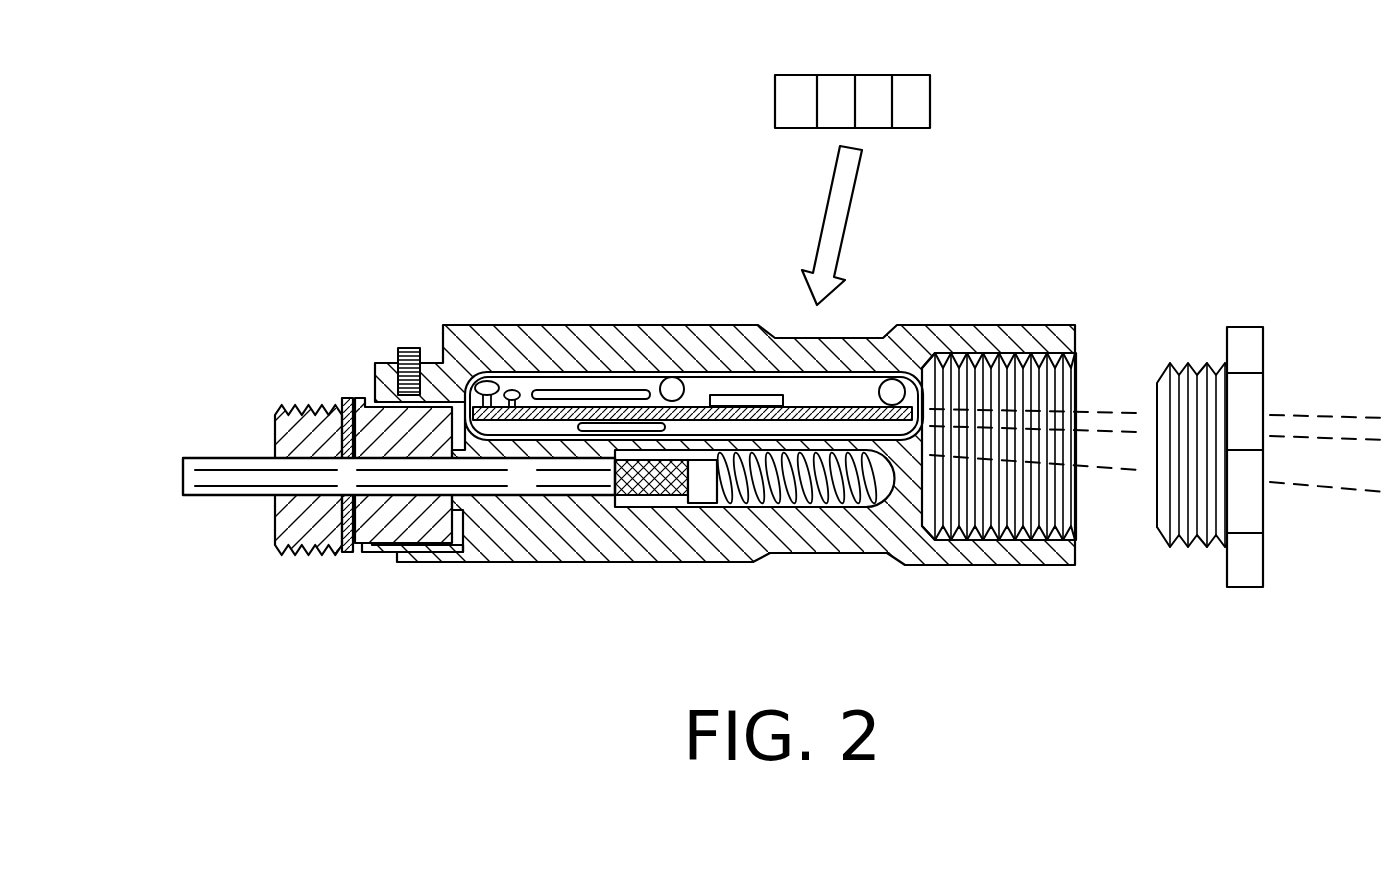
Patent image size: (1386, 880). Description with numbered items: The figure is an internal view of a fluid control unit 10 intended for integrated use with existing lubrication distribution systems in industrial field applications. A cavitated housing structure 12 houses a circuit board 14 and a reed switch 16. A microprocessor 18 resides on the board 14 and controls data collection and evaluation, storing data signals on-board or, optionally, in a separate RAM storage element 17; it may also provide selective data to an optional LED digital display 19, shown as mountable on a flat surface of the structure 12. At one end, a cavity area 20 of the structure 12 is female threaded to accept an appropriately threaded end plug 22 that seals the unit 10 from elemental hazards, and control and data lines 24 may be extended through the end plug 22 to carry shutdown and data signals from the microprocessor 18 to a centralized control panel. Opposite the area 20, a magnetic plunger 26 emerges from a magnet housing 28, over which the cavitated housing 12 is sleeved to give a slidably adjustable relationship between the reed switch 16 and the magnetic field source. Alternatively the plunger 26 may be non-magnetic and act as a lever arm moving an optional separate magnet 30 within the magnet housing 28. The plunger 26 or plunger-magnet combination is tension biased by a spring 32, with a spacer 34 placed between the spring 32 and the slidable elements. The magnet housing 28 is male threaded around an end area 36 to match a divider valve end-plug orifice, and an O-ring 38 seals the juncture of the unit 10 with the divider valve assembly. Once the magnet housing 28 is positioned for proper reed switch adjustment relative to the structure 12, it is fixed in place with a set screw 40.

The fluid control unit 10 is at (492, 651).
The cavitated housing structure 12 is at (983, 328).
The circuit board 14 is at (857, 408).
The reed switch 16 is at (652, 420).
The RAM storage element 17 is at (562, 393).
The microprocessor 18 is at (745, 398).
The LED digital display 19 is at (932, 100).
The cavity area 20 is at (1083, 503).
The end plug 22 is at (1262, 357).
The control and data lines 24 is at (1303, 488).
The magnetic plunger 26 is at (228, 497).
The magnet housing 28 is at (365, 553).
The magnet 30 is at (650, 490).
The spring 32 is at (835, 497).
The spacer 34 is at (703, 490).
The end area 36 is at (300, 405).
The O-ring 38 is at (348, 553).
The set screw 40 is at (407, 348).